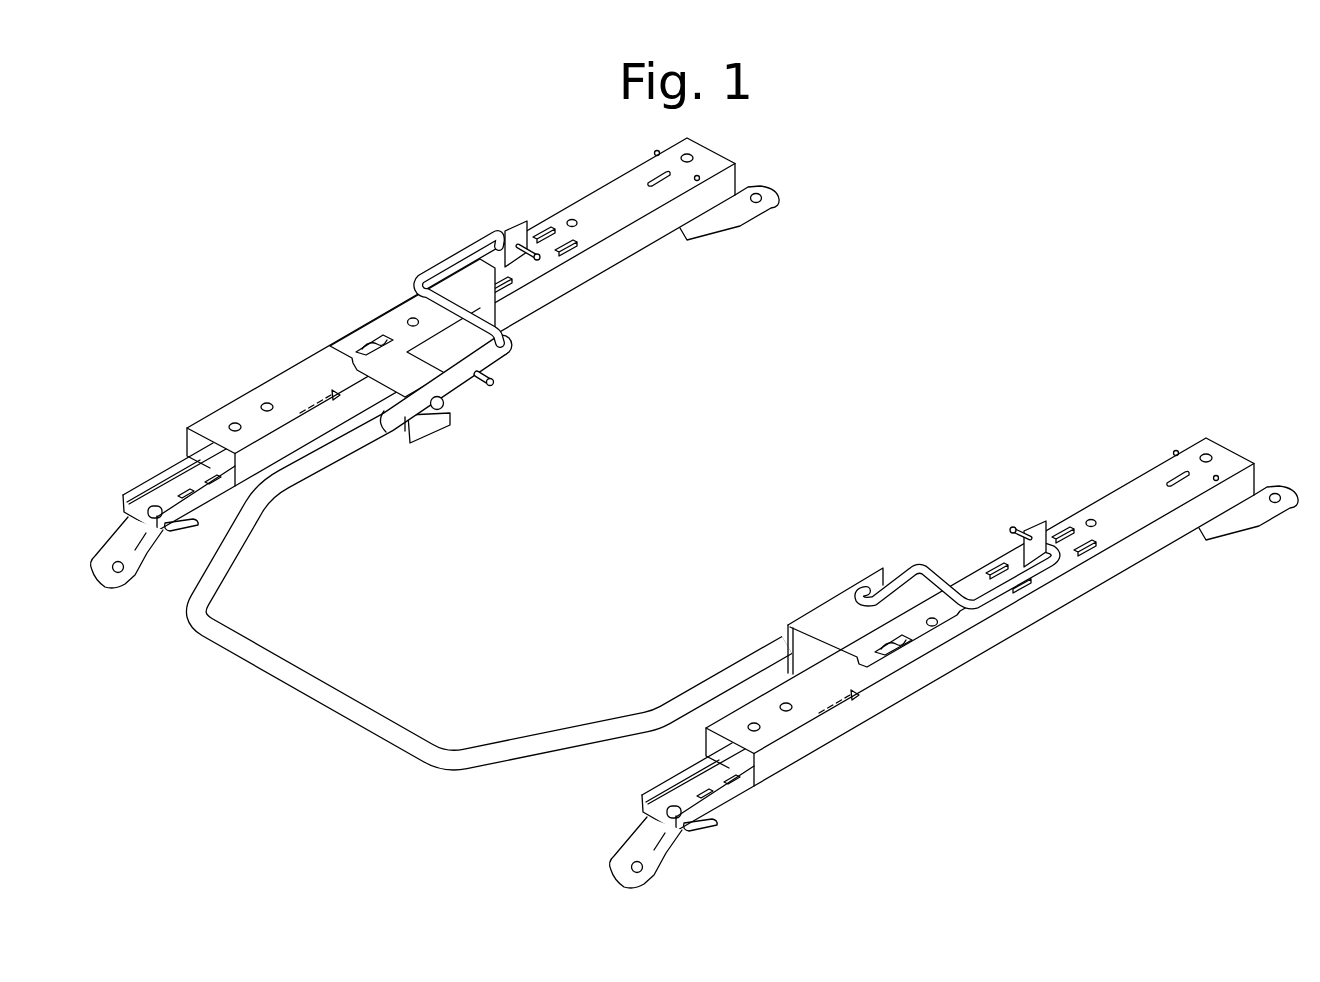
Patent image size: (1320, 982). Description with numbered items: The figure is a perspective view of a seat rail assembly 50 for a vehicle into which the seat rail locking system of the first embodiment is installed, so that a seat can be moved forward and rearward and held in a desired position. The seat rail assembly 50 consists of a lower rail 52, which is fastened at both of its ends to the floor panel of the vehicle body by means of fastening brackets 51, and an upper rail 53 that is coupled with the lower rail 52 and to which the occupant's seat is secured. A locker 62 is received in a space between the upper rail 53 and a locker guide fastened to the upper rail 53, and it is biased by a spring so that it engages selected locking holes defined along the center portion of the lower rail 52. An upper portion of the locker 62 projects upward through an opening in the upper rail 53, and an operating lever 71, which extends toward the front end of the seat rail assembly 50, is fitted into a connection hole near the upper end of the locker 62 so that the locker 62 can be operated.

The seat rail assembly 50 is at (695, 515).
The fastening brackets 51 is at (954, 689).
The lower rail 52 is at (742, 840).
The upper rail 53 is at (759, 700).
The locker 62 is at (1038, 511).
The operating lever 71 is at (317, 688).